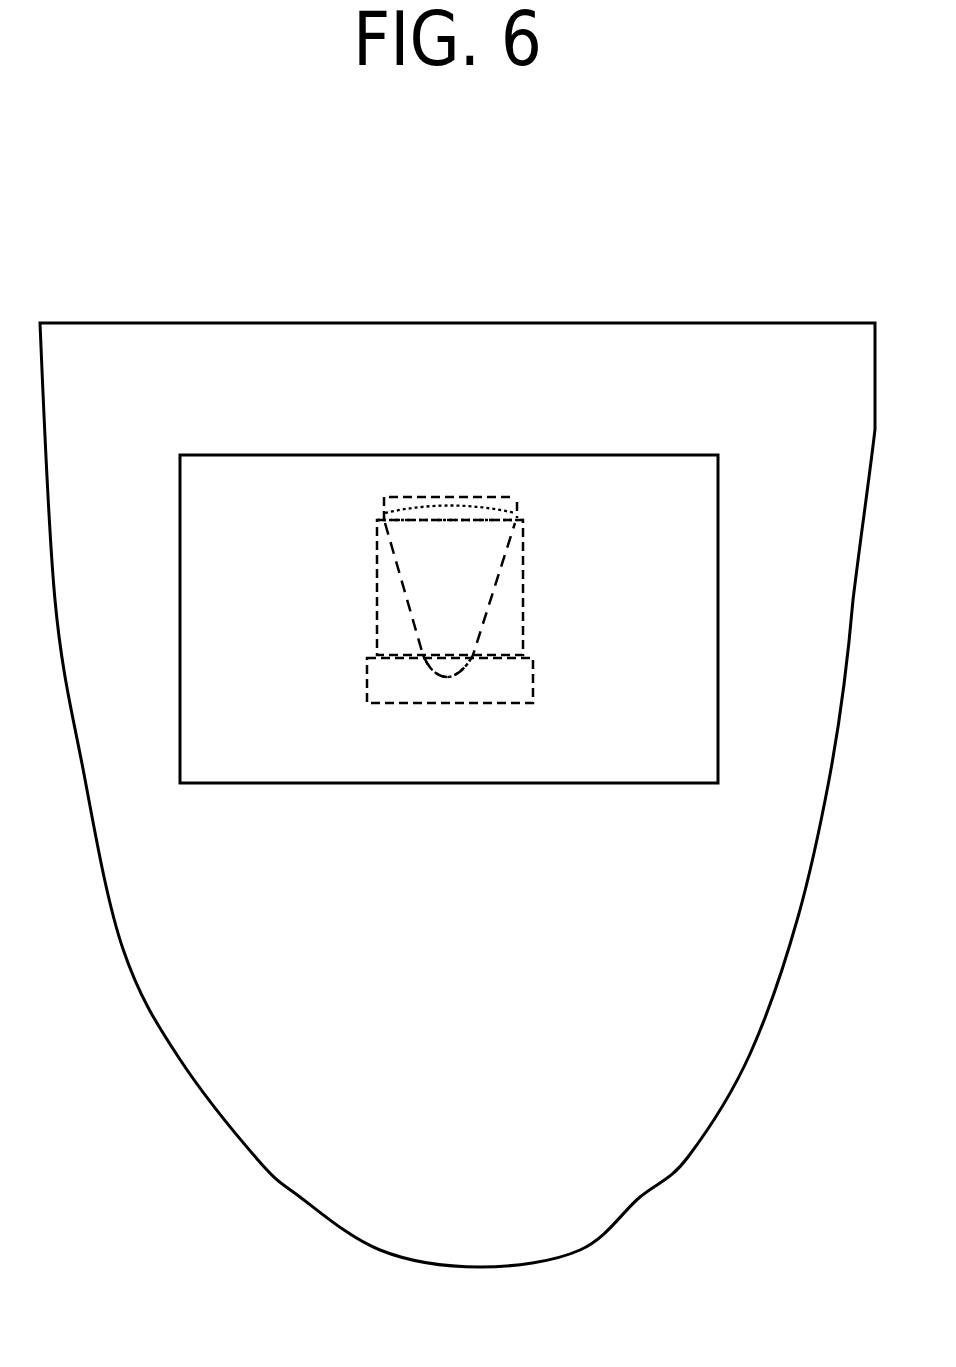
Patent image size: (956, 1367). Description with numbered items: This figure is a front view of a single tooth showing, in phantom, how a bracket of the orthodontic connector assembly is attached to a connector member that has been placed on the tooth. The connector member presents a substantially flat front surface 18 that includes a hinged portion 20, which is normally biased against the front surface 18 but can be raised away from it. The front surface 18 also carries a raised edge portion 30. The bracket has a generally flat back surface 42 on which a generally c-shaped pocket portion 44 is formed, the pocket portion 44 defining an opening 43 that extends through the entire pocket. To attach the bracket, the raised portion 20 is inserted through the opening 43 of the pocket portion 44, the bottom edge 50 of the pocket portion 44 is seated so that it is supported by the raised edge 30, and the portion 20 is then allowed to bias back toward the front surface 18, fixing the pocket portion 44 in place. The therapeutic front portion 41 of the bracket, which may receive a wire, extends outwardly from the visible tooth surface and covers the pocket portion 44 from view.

The second substantially flat front surface 18 is at (487, 945).
The portion 20 is at (498, 495).
The raised edge portion 30 is at (533, 662).
The front portion 41 is at (665, 665).
The back surface 42 is at (147, 510).
The opening 43 is at (445, 512).
The pocket portion 44 is at (378, 605).
The bottom edge 50 is at (500, 658).